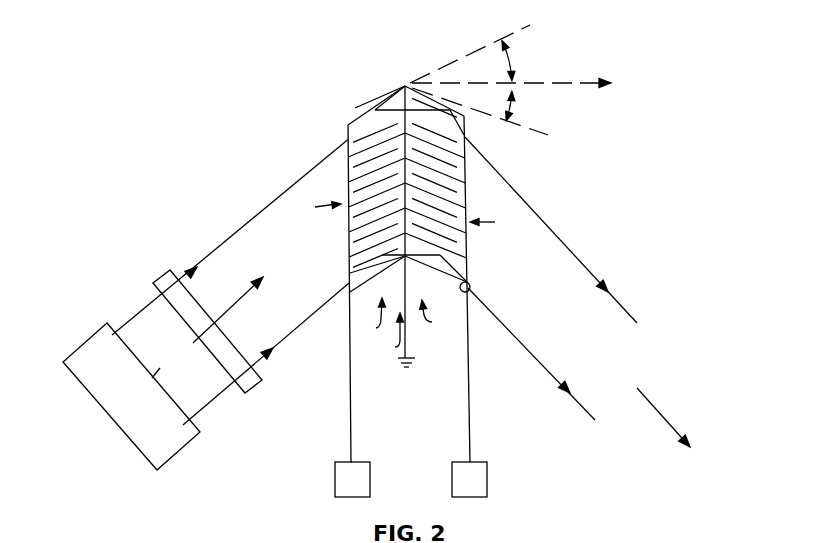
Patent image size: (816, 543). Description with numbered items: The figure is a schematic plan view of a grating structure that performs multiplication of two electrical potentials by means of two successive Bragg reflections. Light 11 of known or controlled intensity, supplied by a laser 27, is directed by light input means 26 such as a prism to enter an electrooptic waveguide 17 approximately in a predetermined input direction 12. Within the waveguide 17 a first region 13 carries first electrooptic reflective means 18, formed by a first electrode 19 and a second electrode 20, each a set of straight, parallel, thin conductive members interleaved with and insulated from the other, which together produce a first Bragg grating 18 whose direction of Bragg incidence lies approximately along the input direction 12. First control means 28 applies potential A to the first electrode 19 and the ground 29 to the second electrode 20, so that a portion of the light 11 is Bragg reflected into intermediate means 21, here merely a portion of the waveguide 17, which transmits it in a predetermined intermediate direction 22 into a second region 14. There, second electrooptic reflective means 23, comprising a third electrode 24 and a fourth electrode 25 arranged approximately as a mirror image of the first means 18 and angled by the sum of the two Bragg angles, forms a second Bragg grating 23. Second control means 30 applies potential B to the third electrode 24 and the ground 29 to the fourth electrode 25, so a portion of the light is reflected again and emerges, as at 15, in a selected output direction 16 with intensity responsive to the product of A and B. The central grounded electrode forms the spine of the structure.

The light 11 is at (293, 258).
The predetermined input direction 12 is at (240, 308).
The first region 13 is at (371, 316).
The second region 14 is at (437, 316).
The emerging light 15 is at (528, 262).
The selected output direction 16 is at (660, 414).
The electrooptic waveguide 17 is at (418, 418).
The first electrooptic reflective means 18 is at (322, 197).
The first electrode 19 is at (346, 131).
The second electrode 20 is at (384, 97).
The intermediate means 21 is at (389, 337).
The predetermined intermediate direction 22 is at (581, 88).
The second electrooptic reflective means 23 is at (487, 213).
The third electrode 24 is at (470, 282).
The fourth electrode 25 is at (407, 258).
The light input means 26 is at (162, 275).
The laser 27 is at (94, 340).
The first control means 28 is at (335, 480).
The ground 29 is at (416, 358).
The second control means 30 is at (487, 479).